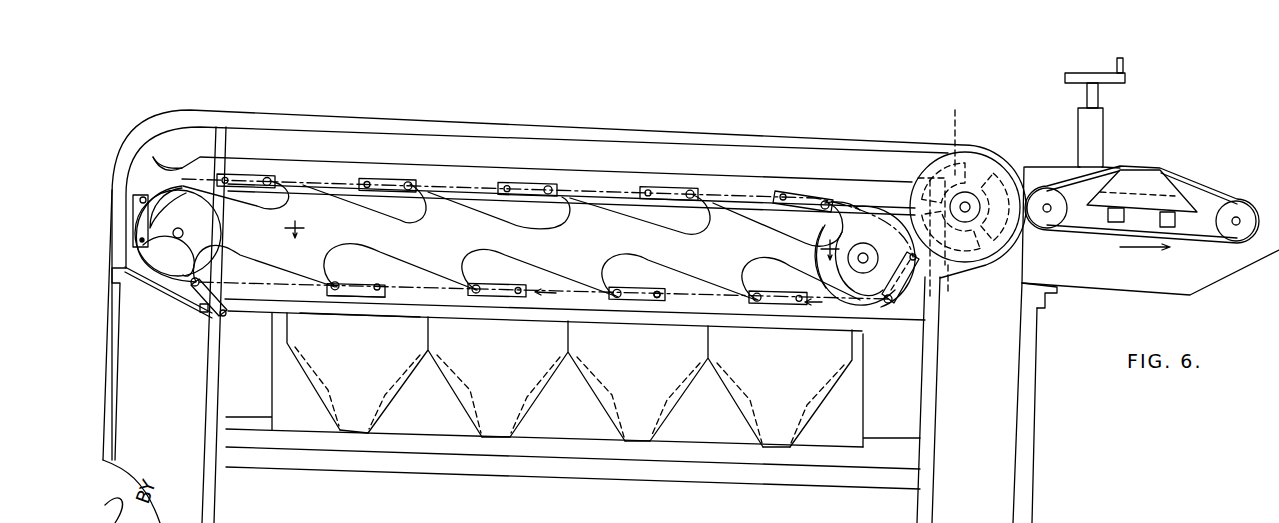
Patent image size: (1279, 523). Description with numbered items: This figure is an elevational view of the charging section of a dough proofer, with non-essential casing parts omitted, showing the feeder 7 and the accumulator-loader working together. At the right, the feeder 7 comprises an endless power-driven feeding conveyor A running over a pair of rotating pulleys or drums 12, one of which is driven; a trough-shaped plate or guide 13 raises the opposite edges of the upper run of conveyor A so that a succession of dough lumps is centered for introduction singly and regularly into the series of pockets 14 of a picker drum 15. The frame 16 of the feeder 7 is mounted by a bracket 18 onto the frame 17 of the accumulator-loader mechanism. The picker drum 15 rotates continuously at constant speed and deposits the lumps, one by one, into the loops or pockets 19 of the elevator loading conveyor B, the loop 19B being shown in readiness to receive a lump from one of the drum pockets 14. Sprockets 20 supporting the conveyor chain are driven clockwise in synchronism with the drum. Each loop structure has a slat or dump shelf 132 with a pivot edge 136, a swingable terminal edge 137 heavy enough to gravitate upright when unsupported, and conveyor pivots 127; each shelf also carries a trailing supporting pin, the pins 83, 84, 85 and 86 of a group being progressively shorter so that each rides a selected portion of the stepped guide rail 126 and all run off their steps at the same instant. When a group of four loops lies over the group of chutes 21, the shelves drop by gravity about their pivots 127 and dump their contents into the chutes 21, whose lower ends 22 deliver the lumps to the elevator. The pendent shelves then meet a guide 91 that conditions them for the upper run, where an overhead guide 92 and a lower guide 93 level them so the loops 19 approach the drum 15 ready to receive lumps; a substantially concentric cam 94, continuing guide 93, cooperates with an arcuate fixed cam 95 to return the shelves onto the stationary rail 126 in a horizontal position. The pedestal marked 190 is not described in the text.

The feeder 7 is at (564, 238).
The rotating pulleys or drums 12 is at (1048, 204).
The trough-shaped plate or guide 13 is at (1160, 192).
The pockets of picker drum 14 is at (968, 201).
The picker drum 15 is at (978, 150).
The frame of the feeder 16 is at (1080, 281).
The frame of the accumulator-loader mechanism 17 is at (1035, 352).
The bracket 18 is at (1045, 299).
The loops or pockets of the loading conveyor 19 is at (413, 212).
The loop or pocket 19B is at (822, 260).
The sprockets 20 is at (222, 226).
The chutes 21 is at (320, 400).
The lower ends of the chutes 22 is at (354, 432).
The supporting pin 83 is at (366, 181).
The supporting pin 84 is at (226, 178).
The supporting pin 85 is at (649, 191).
The supporting pin 86 is at (508, 186).
The guide 91 is at (196, 305).
The overhead guide 92 is at (302, 168).
The lower guide 93 is at (208, 185).
The concentric cam 94 is at (879, 226).
The arcuate fixed cam 95 is at (905, 290).
The guide rail 126 is at (662, 300).
The pivot point 127 is at (336, 283).
The slat or dump shelf 132 is at (358, 312).
The pivot edge 136 is at (332, 296).
The swingable terminal edge 137 is at (386, 284).
The support pedestal 190 is at (1103, 80).
The feeding conveyor A is at (1200, 190).
The elevator loading conveyor B is at (743, 200).